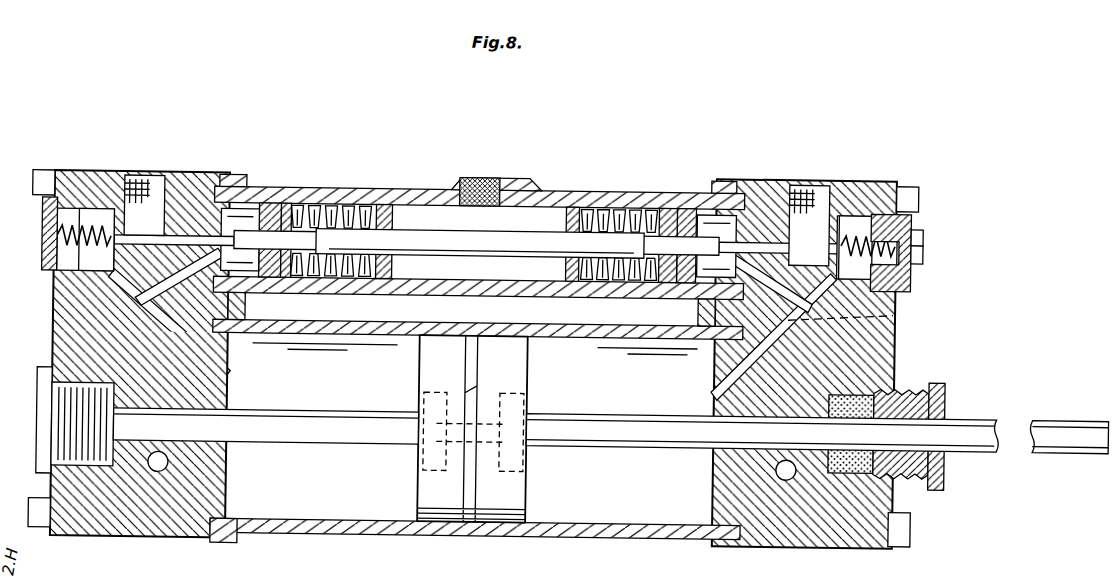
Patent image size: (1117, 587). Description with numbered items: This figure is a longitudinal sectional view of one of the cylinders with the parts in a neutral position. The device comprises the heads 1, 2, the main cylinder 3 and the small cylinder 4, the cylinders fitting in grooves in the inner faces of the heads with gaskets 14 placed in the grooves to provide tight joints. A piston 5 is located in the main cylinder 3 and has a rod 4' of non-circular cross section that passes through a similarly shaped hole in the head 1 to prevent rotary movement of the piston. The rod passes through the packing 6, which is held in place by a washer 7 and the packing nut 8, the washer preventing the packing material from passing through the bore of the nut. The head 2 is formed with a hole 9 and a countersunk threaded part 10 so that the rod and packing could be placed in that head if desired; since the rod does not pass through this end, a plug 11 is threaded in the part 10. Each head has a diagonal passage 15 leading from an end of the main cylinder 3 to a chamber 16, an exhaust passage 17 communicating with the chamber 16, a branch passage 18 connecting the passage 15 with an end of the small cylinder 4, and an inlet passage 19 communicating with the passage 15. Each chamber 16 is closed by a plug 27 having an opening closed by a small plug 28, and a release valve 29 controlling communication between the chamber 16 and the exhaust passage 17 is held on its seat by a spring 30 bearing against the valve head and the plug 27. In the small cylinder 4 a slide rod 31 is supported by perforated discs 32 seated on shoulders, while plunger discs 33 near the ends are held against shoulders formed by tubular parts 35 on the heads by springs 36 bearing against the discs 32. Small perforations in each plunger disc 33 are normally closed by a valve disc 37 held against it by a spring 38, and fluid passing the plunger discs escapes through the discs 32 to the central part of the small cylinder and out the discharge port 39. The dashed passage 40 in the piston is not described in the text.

The head 1 is at (790, 539).
The head 2 is at (55, 298).
The main cylinder 3 is at (355, 532).
The small cylinder 4 is at (479, 220).
The rod 4' is at (817, 414).
The piston 5 is at (532, 361).
The packing 6 is at (875, 386).
The washer 7 is at (898, 385).
The packing nut 8 is at (945, 372).
The hole 9 is at (232, 422).
The countersunk threaded part 10 is at (55, 352).
The plug 11 is at (42, 400).
The gaskets 14 is at (222, 542).
The diagonal passage 15 is at (232, 375).
The chamber 16 is at (100, 210).
The exhaust passage 17 is at (145, 182).
The branch passage 18 is at (232, 300).
The inlet passage 19 is at (896, 305).
The plug 27 is at (924, 224).
The small plug 28 is at (924, 243).
The release valve 29 is at (750, 235).
The spring 30 is at (43, 210).
The slide rod 31 is at (430, 232).
The perforated discs 32 is at (386, 202).
The plunger discs 33 is at (272, 202).
The tubular parts 35 is at (240, 176).
The spring 36 is at (325, 208).
The valve disc 37 is at (287, 202).
The spring 38 is at (328, 284).
The discharge port 39 is at (482, 178).
The piston passage 40 is at (470, 345).